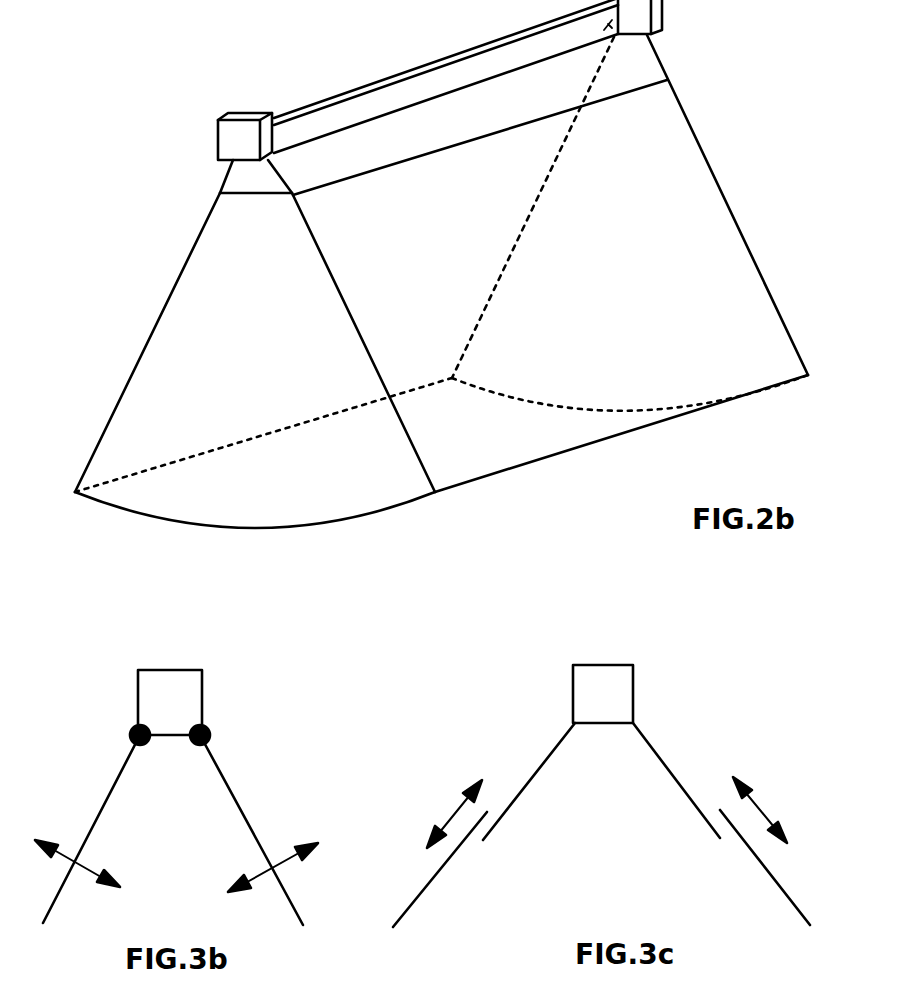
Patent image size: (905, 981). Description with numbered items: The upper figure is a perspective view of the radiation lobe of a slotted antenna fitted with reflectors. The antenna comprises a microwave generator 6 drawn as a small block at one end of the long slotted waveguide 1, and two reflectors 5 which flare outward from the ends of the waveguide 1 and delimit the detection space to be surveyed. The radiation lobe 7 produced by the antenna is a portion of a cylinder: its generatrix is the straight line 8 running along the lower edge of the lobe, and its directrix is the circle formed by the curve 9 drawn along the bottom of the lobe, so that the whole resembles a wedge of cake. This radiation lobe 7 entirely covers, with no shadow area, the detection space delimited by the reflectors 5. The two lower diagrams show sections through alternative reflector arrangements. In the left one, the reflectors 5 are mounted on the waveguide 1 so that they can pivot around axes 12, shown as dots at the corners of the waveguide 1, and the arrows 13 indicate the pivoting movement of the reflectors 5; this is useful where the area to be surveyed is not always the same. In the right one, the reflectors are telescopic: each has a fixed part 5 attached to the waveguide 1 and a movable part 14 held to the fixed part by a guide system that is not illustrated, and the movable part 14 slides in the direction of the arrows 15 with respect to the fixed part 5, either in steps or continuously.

In FIG. 2b, the waveguide 1 is at (430, 83).
In FIG. 3b, the waveguide 1 is at (190, 692).
In FIG. 3c, the waveguide 1 is at (628, 690).
In FIG. 2b, the reflectors 5 is at (225, 177).
In FIG. 3b, the reflectors 5 is at (240, 794).
In FIG. 3c, the reflectors 5 is at (664, 760).
In FIG. 2b, the microwave generator 6 is at (236, 125).
In FIG. 2b, the radiation lobe 7 is at (172, 339).
In FIG. 2b, the straight line 8 is at (568, 453).
In FIG. 2b, the curve 9 is at (278, 530).
In FIG. 3b, the axes 12 is at (212, 735).
In FIG. 3b, the arrows 13 is at (290, 848).
In FIG. 3c, the movable part 14 is at (424, 893).
In FIG. 3c, the arrows 15 is at (752, 784).